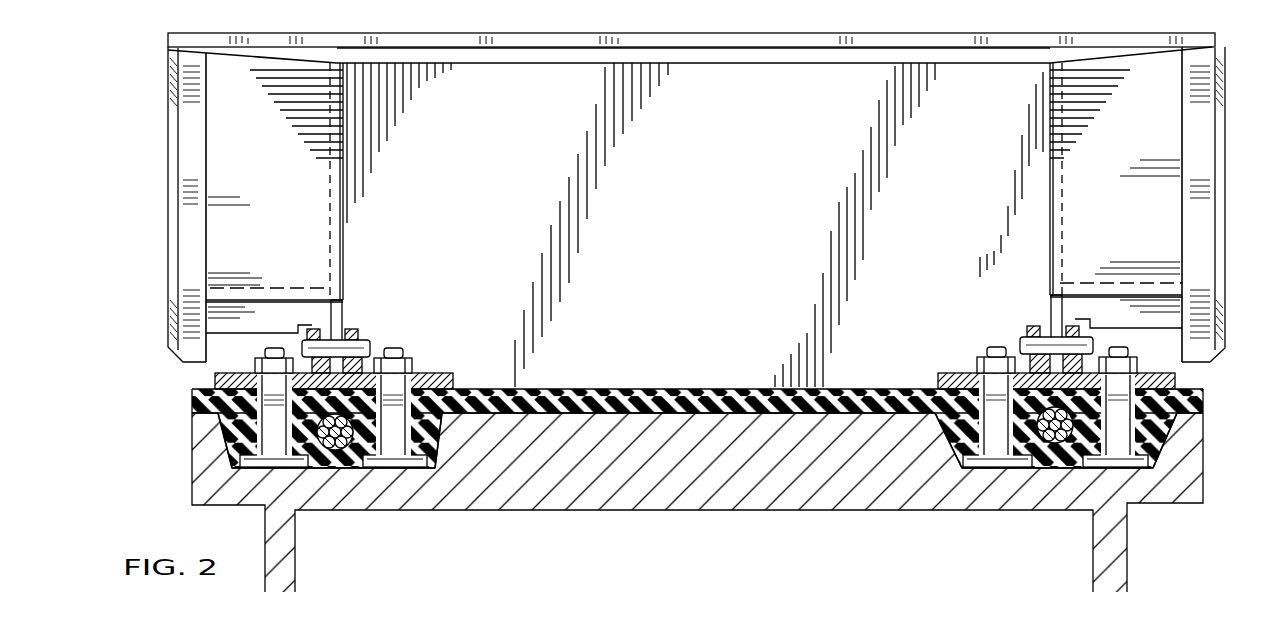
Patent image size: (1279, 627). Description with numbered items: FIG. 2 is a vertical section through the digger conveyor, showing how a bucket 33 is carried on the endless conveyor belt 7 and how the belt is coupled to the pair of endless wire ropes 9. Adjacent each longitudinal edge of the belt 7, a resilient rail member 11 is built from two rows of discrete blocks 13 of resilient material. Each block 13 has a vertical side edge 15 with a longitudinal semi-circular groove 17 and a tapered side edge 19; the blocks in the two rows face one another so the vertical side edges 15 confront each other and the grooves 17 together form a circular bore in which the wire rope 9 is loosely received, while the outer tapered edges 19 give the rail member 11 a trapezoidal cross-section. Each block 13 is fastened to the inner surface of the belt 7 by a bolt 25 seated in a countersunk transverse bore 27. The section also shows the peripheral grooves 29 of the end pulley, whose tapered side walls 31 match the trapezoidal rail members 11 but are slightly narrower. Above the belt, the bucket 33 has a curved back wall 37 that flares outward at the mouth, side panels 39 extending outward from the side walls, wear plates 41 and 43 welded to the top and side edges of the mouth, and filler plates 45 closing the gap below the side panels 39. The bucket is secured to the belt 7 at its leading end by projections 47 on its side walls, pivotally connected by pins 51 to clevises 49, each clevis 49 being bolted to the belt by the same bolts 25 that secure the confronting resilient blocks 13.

The endless conveyor belt 7 is at (576, 388).
The endless wire ropes 9 is at (332, 463).
The resilient rail members 11 is at (404, 477).
The discrete blocks 13 is at (218, 445).
The vertical side edge 15 is at (342, 466).
The semi-circular groove 17 is at (340, 463).
The tapered side edge 19 is at (437, 443).
The bolt 25 is at (397, 344).
The countersunk transverse bore 27 is at (1000, 448).
The peripheral grooves 29 is at (343, 452).
The tapered side walls 31 is at (440, 438).
The buckets 33 is at (551, 41).
The curved back wall 37 is at (678, 72).
The side panels 39 is at (292, 73).
The wear plate 41 is at (428, 36).
The wear plates 43 is at (168, 156).
The filler plates 45 is at (257, 333).
The projections 47 is at (343, 308).
The clevises 49 is at (428, 372).
The pins 51 is at (367, 334).